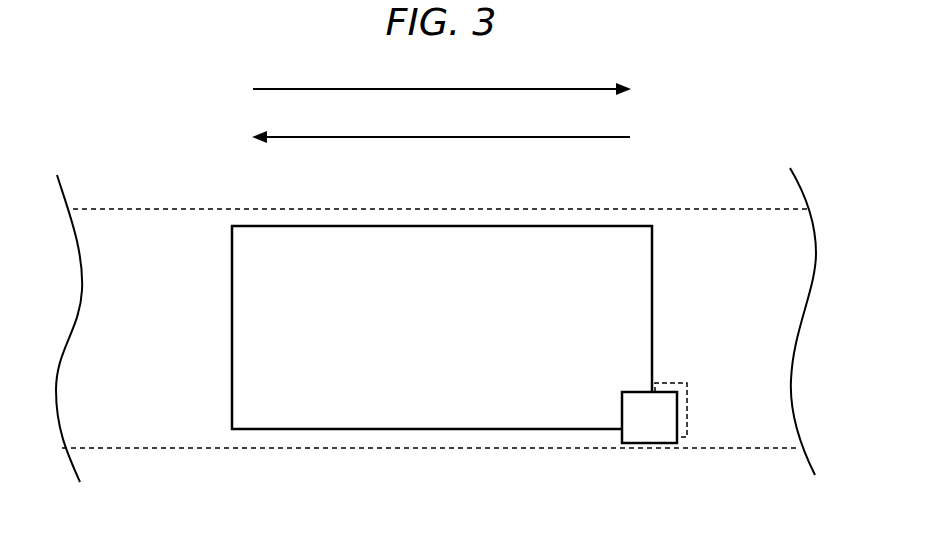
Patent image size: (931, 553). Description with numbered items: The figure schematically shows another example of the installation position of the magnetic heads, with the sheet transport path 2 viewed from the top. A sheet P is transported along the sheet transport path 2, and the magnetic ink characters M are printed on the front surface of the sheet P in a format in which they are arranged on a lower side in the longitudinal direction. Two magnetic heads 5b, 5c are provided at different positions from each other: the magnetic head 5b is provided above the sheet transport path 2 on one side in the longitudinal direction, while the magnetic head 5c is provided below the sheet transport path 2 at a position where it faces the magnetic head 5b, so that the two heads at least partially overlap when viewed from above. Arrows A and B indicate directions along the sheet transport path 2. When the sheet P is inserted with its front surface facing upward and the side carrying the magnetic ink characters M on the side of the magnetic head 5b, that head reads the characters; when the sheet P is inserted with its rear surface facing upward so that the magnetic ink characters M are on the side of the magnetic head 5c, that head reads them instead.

The sheet transport path 2 is at (150, 209).
The sheet P is at (574, 226).
The magnetic ink characters M is at (440, 430).
The magnetic head 5b is at (647, 443).
The magnetic head 5c is at (686, 437).
The conveyance direction A is at (442, 79).
The conveyance direction B is at (441, 127).